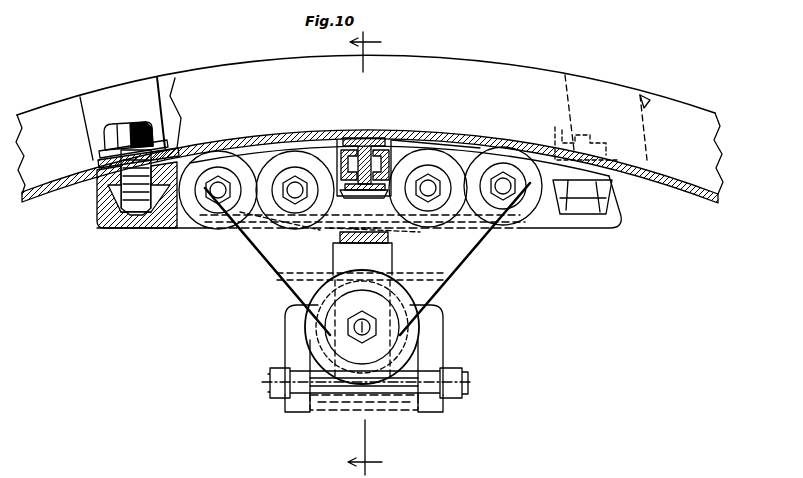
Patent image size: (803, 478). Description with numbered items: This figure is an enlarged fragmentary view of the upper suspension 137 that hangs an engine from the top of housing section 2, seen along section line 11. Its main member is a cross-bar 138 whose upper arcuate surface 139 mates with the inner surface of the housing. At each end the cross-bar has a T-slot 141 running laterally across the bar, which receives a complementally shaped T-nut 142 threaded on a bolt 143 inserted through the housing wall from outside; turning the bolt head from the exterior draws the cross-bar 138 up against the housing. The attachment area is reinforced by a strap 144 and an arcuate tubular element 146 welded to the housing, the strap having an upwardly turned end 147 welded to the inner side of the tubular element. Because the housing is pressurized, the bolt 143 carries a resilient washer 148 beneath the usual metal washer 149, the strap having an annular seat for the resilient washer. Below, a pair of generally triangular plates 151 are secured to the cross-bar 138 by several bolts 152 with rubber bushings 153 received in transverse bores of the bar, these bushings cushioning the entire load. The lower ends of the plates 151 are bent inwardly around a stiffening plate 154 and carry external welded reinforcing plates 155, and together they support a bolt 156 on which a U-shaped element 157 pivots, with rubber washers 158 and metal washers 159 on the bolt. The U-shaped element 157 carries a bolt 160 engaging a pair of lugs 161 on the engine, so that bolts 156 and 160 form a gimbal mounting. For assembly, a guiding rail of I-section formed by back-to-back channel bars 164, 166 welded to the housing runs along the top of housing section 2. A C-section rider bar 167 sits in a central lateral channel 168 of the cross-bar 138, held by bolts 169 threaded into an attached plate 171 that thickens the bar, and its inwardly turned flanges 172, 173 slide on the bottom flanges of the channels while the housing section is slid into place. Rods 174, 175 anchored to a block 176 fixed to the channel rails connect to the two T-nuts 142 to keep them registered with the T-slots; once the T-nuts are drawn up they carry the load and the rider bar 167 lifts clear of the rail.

The housing section 2 is at (672, 196).
The arm of the T-ring 11 is at (376, 253).
The upper suspension 137 is at (236, 276).
The cross-bar 138 is at (198, 229).
The arcuate surface 139 is at (186, 145).
The T-slot 141 is at (124, 229).
The T-nut 142 is at (97, 215).
The bolt 143 is at (152, 136).
The strap 144 is at (176, 148).
The arcuate tubular element 146 is at (66, 96).
The upwardly turned end 147 is at (137, 80).
The resilient washer 148 is at (96, 163).
The metal washer 149 is at (110, 134).
The plate 151 is at (480, 238).
The bolt 152 is at (220, 186).
The rubber bushing 153 is at (250, 152).
The stiffening plate 154 is at (405, 275).
The reinforcing plate 155 is at (392, 252).
The bolt 156 is at (362, 312).
The U-shaped element 157 is at (440, 326).
The rubber washer 158 is at (420, 295).
The metal washer 159 is at (400, 318).
The bolt 160 is at (316, 396).
The lug 161 is at (300, 372).
The channel bar 164 is at (362, 138).
The channel bar 166 is at (386, 140).
The rider bar 167 is at (430, 142).
The lateral channel 168 is at (342, 152).
The bolt 169 is at (342, 234).
The attached plate 171 is at (465, 187).
The inwardly turned flange 172 is at (352, 137).
The inwardly turned flange 173 is at (388, 152).
The rod 174 is at (566, 218).
The rod 175 is at (245, 230).
The block 176 is at (312, 226).